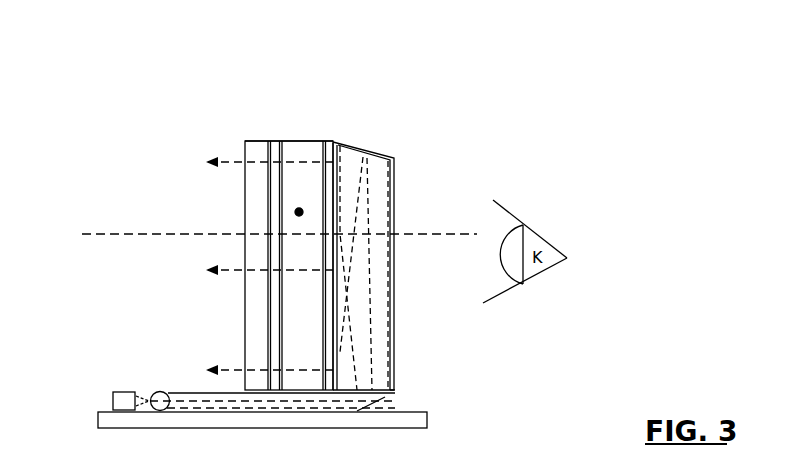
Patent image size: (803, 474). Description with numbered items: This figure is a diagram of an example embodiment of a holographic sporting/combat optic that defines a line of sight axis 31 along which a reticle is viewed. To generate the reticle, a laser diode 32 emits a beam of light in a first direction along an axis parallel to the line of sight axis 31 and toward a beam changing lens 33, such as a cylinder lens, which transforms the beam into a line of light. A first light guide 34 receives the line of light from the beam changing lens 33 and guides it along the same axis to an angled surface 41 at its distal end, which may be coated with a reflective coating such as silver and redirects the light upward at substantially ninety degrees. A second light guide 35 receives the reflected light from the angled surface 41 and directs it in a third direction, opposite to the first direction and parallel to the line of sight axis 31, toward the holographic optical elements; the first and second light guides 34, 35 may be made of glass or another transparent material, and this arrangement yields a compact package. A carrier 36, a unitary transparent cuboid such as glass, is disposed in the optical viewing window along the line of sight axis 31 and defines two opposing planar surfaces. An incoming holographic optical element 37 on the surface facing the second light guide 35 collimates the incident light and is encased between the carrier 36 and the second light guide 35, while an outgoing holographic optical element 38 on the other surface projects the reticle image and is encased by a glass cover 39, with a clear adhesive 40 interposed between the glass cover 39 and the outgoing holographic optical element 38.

The line of sight axis 31 is at (92, 233).
The laser diode 32 is at (111, 401).
The beam changing lens 33 is at (157, 391).
The first light guide 34 is at (203, 393).
The second light guide 35 is at (397, 332).
The carrier 36 is at (296, 209).
The incoming holographic optical element 37 is at (336, 144).
The outgoing holographic optical element 38 is at (272, 267).
The glass cover 39 is at (242, 362).
The clear adhesive 40 is at (265, 323).
The angled surface 41 is at (387, 399).